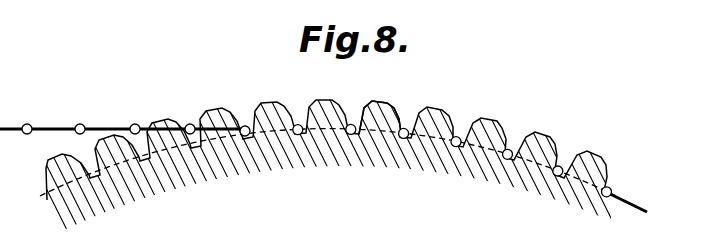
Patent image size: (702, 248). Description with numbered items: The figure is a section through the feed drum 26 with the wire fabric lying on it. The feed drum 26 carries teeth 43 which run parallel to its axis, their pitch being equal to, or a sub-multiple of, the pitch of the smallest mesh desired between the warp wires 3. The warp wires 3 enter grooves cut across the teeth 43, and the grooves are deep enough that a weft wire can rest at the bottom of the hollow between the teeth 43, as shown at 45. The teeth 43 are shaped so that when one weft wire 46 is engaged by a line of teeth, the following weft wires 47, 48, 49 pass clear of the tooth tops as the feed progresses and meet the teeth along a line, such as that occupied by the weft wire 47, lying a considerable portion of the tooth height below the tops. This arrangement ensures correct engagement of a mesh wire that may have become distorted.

The warp wire 3 is at (7, 127).
The feed drum 26 is at (337, 150).
The teeth 43 is at (390, 110).
The weft wire resting position 45 is at (297, 124).
The weft wire 46 is at (245, 126).
The weft wire 47 is at (191, 124).
The weft wire 48 is at (135, 124).
The weft wire 49 is at (80, 124).